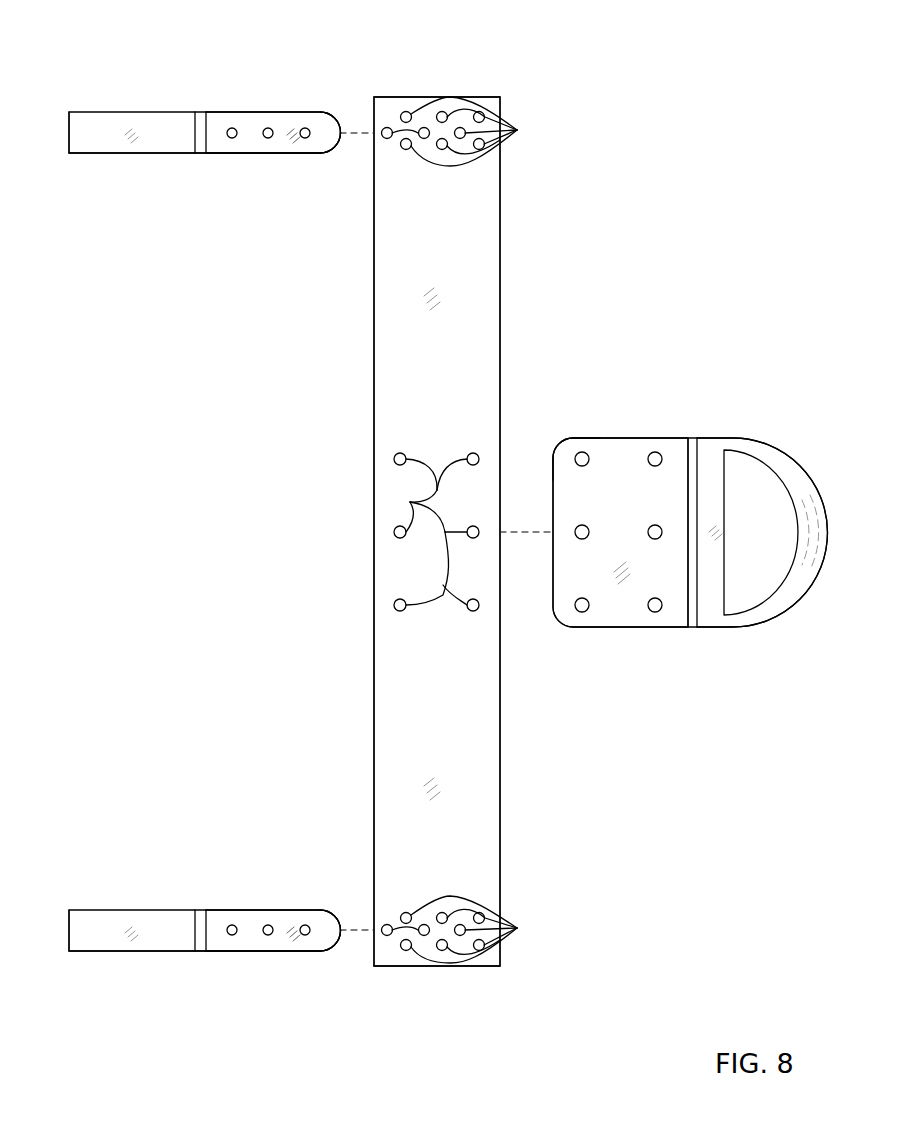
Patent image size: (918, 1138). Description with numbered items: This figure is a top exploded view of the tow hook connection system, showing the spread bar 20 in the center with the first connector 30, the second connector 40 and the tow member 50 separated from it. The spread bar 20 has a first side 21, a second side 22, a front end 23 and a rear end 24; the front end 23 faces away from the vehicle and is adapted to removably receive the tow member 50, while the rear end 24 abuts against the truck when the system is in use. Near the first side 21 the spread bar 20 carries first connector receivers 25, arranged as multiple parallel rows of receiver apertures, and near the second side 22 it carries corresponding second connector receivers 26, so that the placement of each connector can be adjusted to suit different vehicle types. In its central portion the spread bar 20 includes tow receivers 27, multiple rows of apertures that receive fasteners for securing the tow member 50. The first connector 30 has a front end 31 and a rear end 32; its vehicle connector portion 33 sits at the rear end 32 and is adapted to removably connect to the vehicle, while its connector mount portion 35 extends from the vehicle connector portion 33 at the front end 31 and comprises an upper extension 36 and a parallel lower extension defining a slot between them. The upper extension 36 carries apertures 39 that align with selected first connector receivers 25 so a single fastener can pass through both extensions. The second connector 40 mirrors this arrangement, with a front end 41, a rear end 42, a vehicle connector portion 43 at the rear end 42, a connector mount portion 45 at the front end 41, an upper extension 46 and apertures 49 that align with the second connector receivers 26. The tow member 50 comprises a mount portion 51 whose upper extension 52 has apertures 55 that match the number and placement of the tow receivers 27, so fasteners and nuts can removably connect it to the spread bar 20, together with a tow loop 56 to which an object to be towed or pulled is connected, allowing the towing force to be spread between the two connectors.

The spread bar 20 is at (374, 683).
The first side 21 is at (438, 967).
The second side 22 is at (483, 97).
The front end 23 is at (500, 307).
The rear end 24 is at (374, 360).
The first connector receivers 25 is at (517, 928).
The second connector receivers 26 is at (517, 130).
The tow receivers 27 is at (410, 502).
The first connector 30 is at (153, 910).
The front end 31 is at (334, 952).
The rear end 32 is at (69, 932).
The vehicle connector portion 33 is at (113, 952).
The connector mount portion 35 is at (248, 922).
The upper extension 36 is at (290, 922).
The apertures 39 is at (305, 936).
The second connector 40 is at (153, 112).
The front end 41 is at (338, 114).
The rear end 42 is at (69, 132).
The vehicle connector portion 43 is at (113, 155).
The connector mount portion 45 is at (248, 125).
The upper extension 46 is at (290, 125).
The apertures 49 is at (305, 139).
The tow member 50 is at (675, 630).
The mount portion 51 is at (607, 627).
The upper extension 52 is at (565, 448).
The apertures 55 is at (587, 600).
The tow loop 56 is at (757, 438).